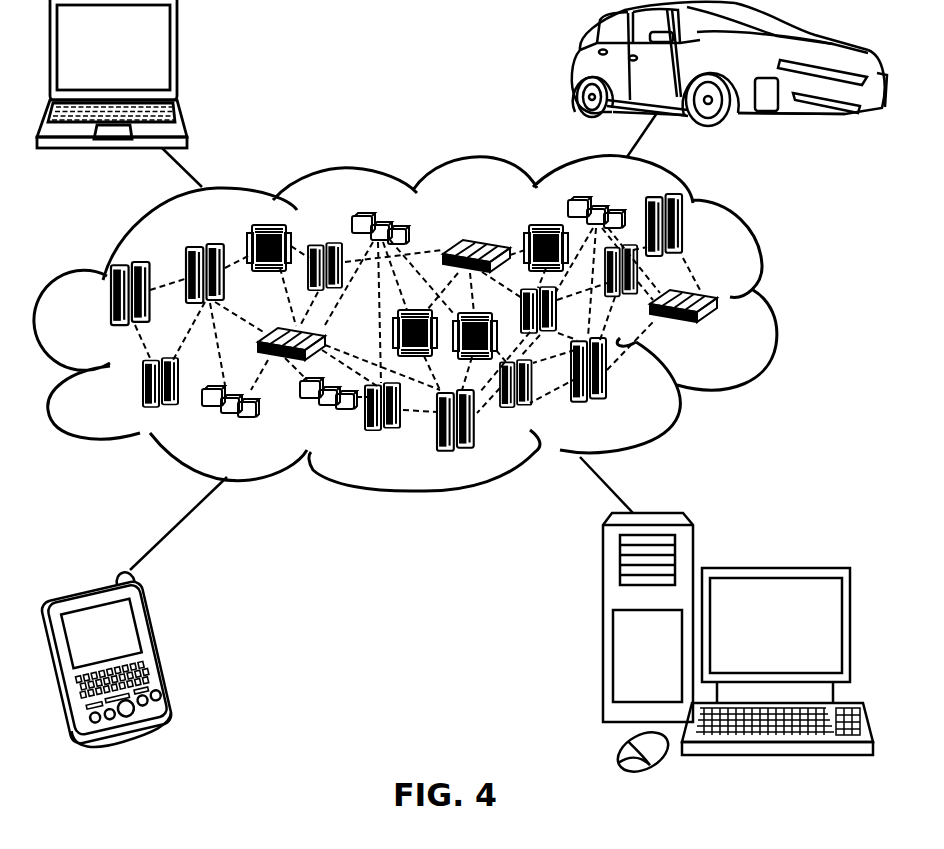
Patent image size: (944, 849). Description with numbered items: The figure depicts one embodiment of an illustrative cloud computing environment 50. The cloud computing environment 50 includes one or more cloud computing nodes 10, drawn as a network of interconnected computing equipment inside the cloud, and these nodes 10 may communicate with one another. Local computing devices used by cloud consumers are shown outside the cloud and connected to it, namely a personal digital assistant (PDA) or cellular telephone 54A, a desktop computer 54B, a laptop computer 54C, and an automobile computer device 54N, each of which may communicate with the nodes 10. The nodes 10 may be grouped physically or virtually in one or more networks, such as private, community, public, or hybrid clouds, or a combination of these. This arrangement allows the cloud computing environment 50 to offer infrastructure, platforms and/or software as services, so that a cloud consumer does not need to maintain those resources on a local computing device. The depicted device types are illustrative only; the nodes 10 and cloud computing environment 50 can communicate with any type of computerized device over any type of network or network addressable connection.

The cloud computing nodes 10 is at (722, 332).
The cloud computing environment 50 is at (773, 300).
The personal digital assistant (PDA) or cellular telephone 54A is at (163, 652).
The desktop computer 54B is at (773, 567).
The laptop computer 54C is at (177, 53).
The automobile computer device 54N is at (572, 68).